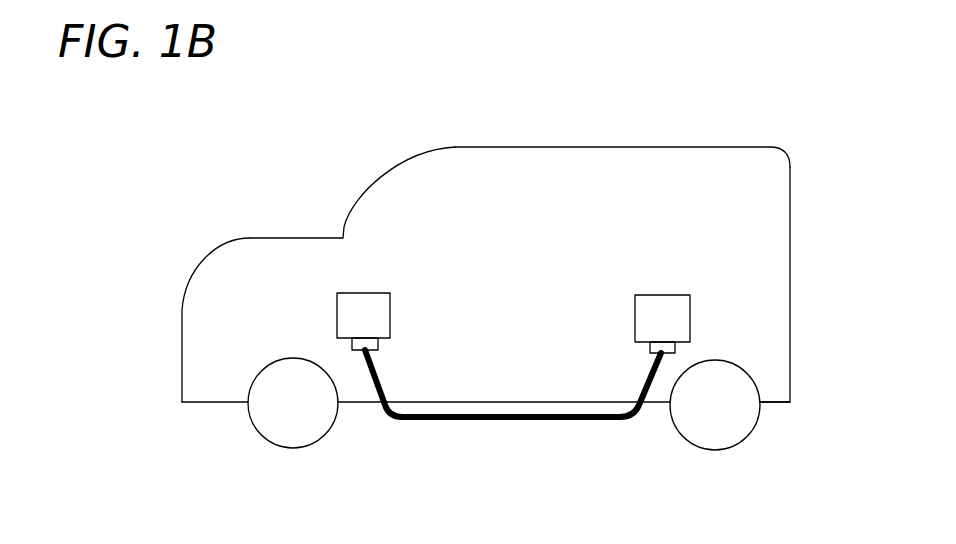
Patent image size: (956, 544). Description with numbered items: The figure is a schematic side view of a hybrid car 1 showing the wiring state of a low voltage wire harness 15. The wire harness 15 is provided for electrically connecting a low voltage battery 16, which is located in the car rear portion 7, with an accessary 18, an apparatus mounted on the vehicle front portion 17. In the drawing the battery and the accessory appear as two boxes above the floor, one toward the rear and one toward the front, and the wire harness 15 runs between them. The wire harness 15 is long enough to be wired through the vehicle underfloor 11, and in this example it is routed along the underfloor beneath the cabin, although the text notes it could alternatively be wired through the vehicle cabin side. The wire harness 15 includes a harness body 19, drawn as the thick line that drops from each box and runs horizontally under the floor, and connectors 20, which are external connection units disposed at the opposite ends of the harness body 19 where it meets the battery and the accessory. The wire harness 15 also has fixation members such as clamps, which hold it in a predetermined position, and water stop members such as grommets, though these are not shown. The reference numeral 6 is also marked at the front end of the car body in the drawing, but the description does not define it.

The hybrid car 1 is at (538, 135).
The front portion of vehicle 6 is at (196, 378).
The car rear portion 7 is at (770, 378).
The vehicle underfloor 11 is at (585, 423).
The wire harness 15 is at (418, 424).
The low voltage battery 16 is at (662, 302).
The vehicle front portion 17 is at (317, 252).
The accessary 18 is at (376, 302).
The harness body 19 is at (392, 388).
The connectors 20 is at (378, 345).